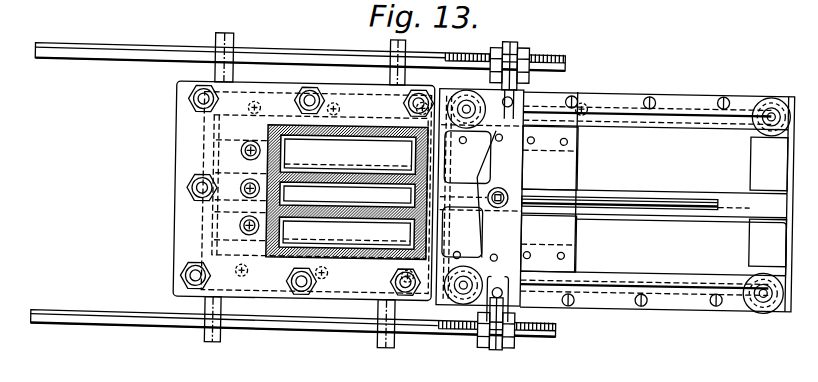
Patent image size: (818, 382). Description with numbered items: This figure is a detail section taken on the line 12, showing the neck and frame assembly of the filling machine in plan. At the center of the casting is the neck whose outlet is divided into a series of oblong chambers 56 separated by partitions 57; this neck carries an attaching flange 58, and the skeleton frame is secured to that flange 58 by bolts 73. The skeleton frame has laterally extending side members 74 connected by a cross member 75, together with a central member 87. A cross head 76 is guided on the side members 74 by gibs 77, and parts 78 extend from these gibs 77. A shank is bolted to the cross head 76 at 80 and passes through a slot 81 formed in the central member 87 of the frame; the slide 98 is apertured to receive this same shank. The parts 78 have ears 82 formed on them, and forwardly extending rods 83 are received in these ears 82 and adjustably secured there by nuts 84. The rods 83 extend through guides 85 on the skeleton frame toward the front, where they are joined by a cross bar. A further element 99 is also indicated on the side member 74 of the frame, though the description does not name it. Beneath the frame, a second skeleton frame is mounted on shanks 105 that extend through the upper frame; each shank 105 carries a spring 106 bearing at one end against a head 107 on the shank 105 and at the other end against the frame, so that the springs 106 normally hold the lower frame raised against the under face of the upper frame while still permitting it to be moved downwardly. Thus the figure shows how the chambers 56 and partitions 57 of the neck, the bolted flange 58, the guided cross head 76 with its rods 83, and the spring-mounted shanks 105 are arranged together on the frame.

The section line 12 is at (448, 196).
The oblong chambers 56 is at (347, 192).
The partitions 57 is at (347, 195).
The attaching flange 58 is at (281, 190).
The bolts 73 is at (166, 273).
The side members 74 is at (657, 206).
The cross member 75 is at (682, 205).
The cross head 76 is at (507, 198).
The gibs 77 is at (645, 200).
The parts 78 is at (469, 194).
The bolt connection 80 is at (503, 182).
The slot 81 is at (654, 222).
The ears 82 is at (520, 202).
The rods 83 is at (298, 190).
The nuts 84 is at (507, 202).
The guides 85 is at (291, 194).
The central member 87 is at (636, 184).
The slide 98 is at (568, 182).
The rail screw 99 is at (609, 87).
The shanks 105 is at (725, 321).
The spring 106 is at (743, 326).
The head 107 is at (743, 315).